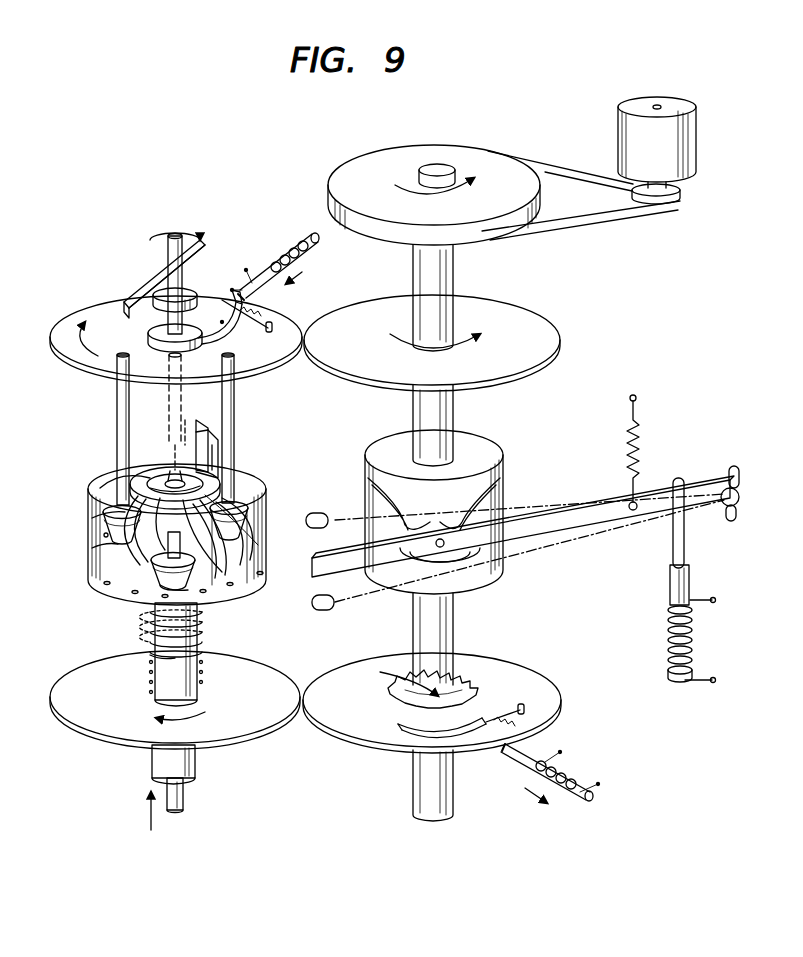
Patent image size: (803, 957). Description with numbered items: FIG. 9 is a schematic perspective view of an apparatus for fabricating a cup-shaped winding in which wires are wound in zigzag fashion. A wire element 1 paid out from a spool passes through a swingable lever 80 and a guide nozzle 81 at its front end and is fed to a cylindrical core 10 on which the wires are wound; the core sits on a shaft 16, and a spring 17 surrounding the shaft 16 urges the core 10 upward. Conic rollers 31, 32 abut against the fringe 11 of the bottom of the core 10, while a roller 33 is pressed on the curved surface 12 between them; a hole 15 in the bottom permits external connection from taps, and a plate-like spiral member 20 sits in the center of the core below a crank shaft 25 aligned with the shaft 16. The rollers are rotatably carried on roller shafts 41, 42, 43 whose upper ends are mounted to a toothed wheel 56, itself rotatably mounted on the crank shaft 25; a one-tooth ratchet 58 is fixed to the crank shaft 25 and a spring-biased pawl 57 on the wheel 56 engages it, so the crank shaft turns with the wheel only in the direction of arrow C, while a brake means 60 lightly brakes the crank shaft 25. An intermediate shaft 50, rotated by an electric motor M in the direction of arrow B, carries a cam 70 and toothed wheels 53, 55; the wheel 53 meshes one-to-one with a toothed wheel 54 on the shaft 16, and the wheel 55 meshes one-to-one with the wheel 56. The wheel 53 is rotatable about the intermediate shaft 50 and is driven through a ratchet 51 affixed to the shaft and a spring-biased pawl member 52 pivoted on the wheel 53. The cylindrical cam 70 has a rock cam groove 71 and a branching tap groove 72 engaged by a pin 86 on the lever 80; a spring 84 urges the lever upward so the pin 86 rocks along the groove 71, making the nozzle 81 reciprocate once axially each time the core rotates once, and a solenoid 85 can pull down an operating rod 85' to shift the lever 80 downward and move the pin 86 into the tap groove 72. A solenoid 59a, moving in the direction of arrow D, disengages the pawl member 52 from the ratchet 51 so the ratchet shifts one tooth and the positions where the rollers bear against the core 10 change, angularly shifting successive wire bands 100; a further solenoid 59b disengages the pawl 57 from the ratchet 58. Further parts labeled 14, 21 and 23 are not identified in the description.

The wire element 1 is at (288, 574).
The core 10 is at (90, 510).
The fringe 11 is at (100, 484).
The curved surface 12 is at (110, 490).
The guide passages 14 is at (88, 571).
The hole 15 is at (175, 482).
The shaft 16 is at (197, 612).
The spring 17 is at (150, 652).
The spiral member 20 is at (118, 486).
The inner ring 21 is at (156, 470).
The bracket 23 is at (220, 466).
The crank shaft 25 is at (168, 250).
The conic roller 31 is at (252, 520).
The conic roller 32 is at (100, 530).
The cylindrical or conic roller 33 is at (165, 584).
The roller shaft 41 is at (235, 400).
The roller shaft 42 is at (117, 398).
The roller shaft 43 is at (169, 396).
The intermediate shaft 50 is at (452, 272).
The ratchet 51 is at (468, 686).
The pawl member 52 is at (416, 736).
The toothed wheel 53 is at (546, 690).
The toothed wheel 54 is at (132, 727).
The toothed wheel 55 is at (556, 350).
The toothed wheel 56 is at (102, 302).
The pawl 57 is at (228, 318).
The ratchet 58 is at (152, 334).
The solenoid 59a is at (585, 796).
The solenoid 59b is at (308, 232).
The brake means 60 is at (158, 292).
The cam 70 is at (490, 442).
The rock cam groove 71 is at (470, 500).
The tap groove 72 is at (482, 560).
The lever 80 is at (565, 524).
The guide nozzle 81 is at (312, 574).
The spring 84 is at (638, 436).
The solenoid 85 is at (671, 640).
The operating rod 85' is at (658, 541).
The pin 86 is at (428, 508).
The wire band 100 is at (246, 502).
The electric motor M is at (625, 130).